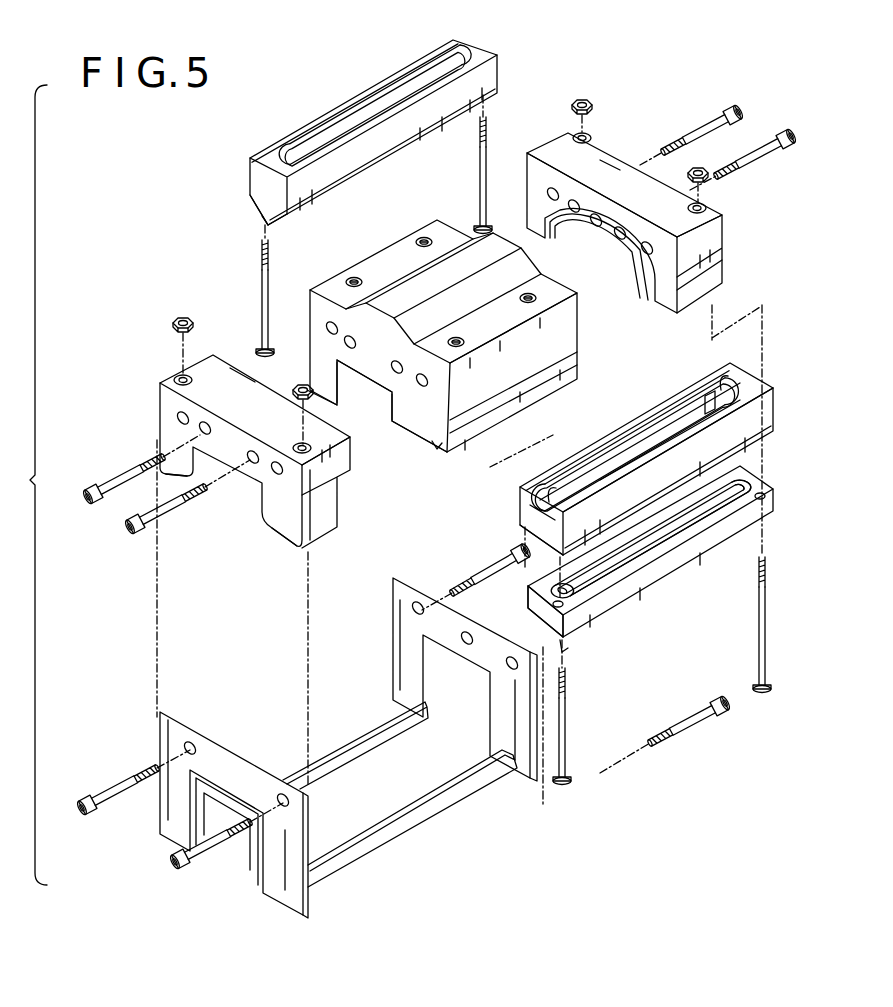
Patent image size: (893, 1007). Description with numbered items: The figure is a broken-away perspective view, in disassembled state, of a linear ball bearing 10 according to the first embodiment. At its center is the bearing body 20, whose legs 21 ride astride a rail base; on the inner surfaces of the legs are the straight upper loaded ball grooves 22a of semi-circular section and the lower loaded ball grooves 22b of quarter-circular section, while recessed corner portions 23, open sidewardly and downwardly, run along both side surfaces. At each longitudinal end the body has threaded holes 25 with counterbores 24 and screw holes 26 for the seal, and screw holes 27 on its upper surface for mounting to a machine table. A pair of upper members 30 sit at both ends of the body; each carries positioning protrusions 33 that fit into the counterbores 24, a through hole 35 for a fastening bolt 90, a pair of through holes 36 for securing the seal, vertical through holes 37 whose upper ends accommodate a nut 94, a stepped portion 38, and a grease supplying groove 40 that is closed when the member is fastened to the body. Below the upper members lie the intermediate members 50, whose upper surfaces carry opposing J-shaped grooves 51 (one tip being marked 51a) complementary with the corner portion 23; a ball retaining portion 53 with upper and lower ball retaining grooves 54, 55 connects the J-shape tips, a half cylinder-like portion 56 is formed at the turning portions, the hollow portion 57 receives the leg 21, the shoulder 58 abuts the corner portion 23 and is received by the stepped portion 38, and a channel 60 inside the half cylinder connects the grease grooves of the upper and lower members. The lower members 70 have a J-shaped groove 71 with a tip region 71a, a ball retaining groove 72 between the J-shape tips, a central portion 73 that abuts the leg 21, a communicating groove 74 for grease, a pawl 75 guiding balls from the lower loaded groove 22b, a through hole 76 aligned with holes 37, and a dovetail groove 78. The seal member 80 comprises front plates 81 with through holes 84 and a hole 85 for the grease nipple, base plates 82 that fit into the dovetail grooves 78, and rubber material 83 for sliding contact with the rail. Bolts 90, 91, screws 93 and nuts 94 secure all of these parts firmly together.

The linear guide assembly 10 is at (523, 39).
The bearing body 20 is at (403, 240).
The legs 21 is at (377, 439).
The upper loaded ball grooves 22a is at (350, 385).
The lower loaded ball grooves 22b is at (340, 395).
The recessed corner portions 23 is at (440, 452).
The counterbores 24 is at (343, 344).
The threaded holes 25 is at (392, 366).
The screw holes 26 is at (331, 320).
The screw holes 27 is at (428, 238).
The upper members 30 is at (229, 365).
The protrusions 33 is at (540, 236).
The through hole 35 is at (212, 427).
The through holes 36 is at (176, 418).
The vertical through holes 37 is at (193, 381).
The stepped portion 38 is at (163, 438).
The grease supplying groove 40 is at (580, 214).
The intermediate members 50 is at (248, 163).
The J-shaped grooves 51 is at (525, 510).
The tip of the J-shape 51a is at (700, 385).
The ball retaining portion 53 is at (498, 62).
The upper ball retaining groove 54 is at (592, 456).
The lower ball retaining groove 55 is at (616, 480).
The half cylinder-like portion 56 is at (718, 381).
The hollow portion 57 is at (663, 458).
The shoulder 58 is at (388, 78).
The channel 60 is at (719, 432).
The lower members 70 is at (250, 203).
The J-shaped groove 71 is at (548, 604).
The rounded end 71a is at (736, 479).
The ball retaining groove 72 is at (626, 546).
The central portion 73 is at (680, 518).
The communicating groove 74 is at (725, 503).
The pawl 75 is at (708, 496).
The through hole 76 is at (756, 590).
The dovetail groove 78 is at (264, 225).
The seal member 80 is at (328, 906).
The front plates 81 is at (505, 713).
The base plates 82 is at (378, 722).
The rubber material 83 is at (193, 826).
The through holes 84 is at (420, 602).
The hole 85 is at (470, 633).
The bolts 90 is at (132, 488).
The bolts 91 is at (490, 572).
The screws 93 is at (478, 154).
The nuts 94 is at (194, 325).